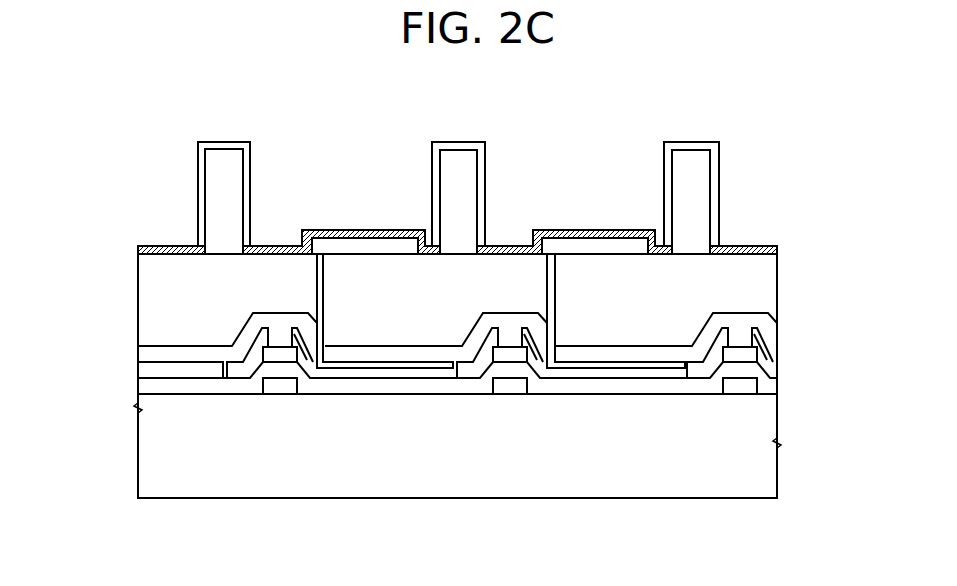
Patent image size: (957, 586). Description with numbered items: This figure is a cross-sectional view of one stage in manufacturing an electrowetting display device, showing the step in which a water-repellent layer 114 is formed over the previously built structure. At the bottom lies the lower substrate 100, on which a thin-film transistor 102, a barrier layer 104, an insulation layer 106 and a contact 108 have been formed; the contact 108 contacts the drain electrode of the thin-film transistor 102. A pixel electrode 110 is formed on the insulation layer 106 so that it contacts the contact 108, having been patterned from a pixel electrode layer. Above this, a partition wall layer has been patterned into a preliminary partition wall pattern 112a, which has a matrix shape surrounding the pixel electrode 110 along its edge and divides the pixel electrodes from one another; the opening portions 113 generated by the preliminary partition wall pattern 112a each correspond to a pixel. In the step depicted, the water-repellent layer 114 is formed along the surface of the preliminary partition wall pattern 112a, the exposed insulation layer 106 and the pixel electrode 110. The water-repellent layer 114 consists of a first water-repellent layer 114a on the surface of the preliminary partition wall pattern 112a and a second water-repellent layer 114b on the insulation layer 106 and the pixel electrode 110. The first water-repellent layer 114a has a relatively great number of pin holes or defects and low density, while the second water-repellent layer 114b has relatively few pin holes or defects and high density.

The lower substrate 100 is at (775, 441).
The thin-film transistor 102 is at (277, 397).
The barrier layer 104 is at (772, 333).
The insulation layer 106 is at (773, 292).
The contact 108 is at (320, 290).
The pixel electrode 110 is at (628, 250).
The preliminary partition wall pattern 112a is at (693, 209).
The opening portion 113 is at (307, 187).
The water-repellent layer 114 is at (68, 173).
The first water-repellent layer 114a is at (197, 181).
The second water-repellent layer 114b is at (163, 245).